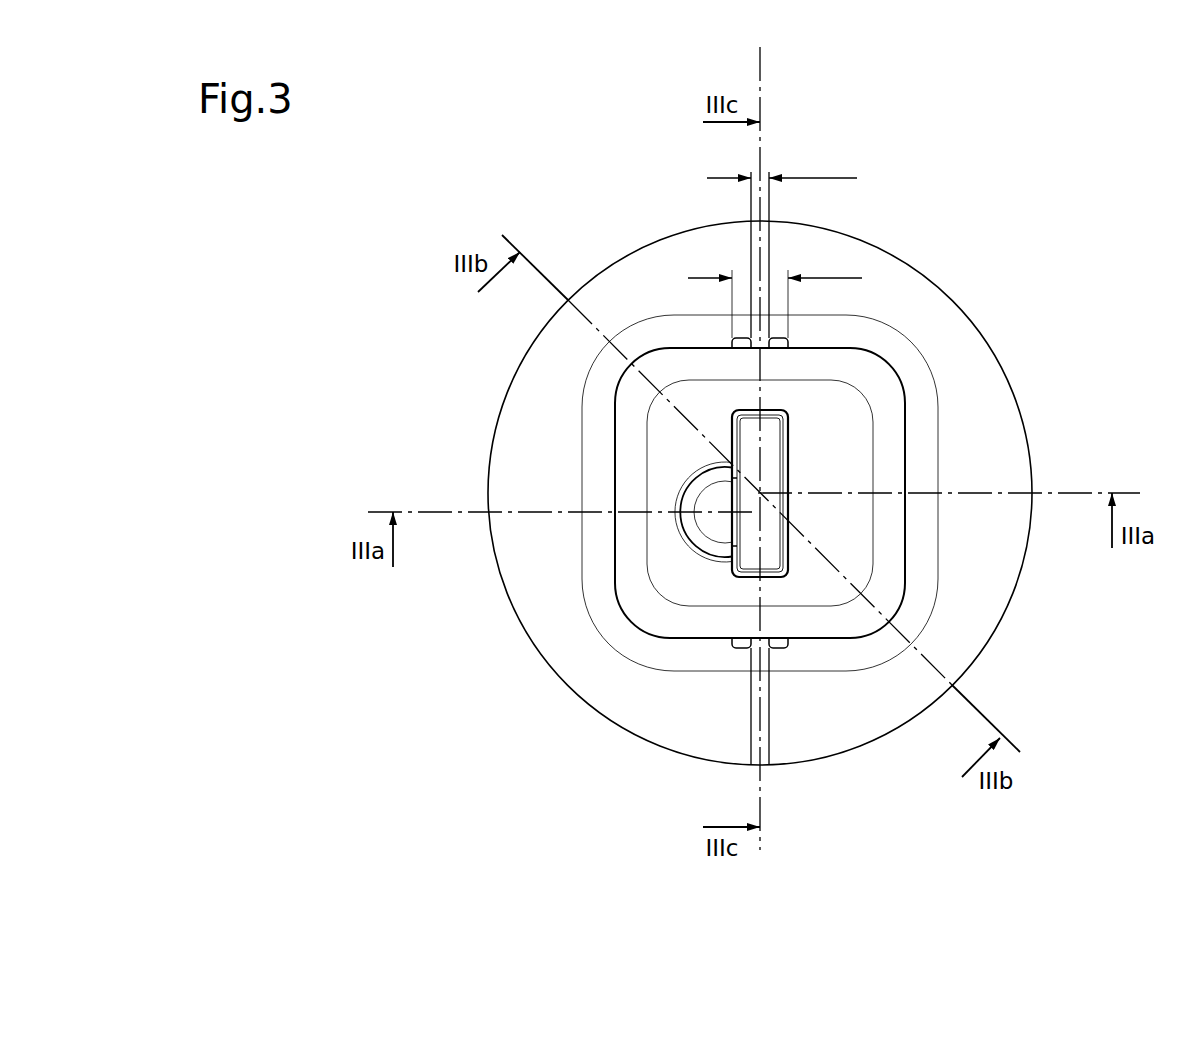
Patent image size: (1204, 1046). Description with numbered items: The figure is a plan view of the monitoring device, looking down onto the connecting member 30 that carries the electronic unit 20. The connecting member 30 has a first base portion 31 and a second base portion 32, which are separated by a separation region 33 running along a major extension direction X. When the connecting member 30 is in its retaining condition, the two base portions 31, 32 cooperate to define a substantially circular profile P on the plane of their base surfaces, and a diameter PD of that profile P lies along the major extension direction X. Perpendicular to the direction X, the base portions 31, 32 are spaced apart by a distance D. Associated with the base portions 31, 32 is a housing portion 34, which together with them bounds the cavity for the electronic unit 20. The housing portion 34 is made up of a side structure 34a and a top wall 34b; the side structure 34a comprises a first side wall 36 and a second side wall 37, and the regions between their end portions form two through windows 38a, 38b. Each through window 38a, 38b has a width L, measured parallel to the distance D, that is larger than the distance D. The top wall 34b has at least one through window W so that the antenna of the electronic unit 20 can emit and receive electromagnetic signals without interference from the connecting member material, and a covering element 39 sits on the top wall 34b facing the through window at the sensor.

The electronic unit 20 is at (782, 442).
The connecting member 30 is at (963, 287).
The first base portion 31 is at (985, 585).
The second base portion 32 is at (625, 702).
The separation region 33 is at (757, 232).
The housing portion 34 is at (905, 473).
The side structure 34a is at (613, 467).
The top wall 34b is at (660, 437).
The first side wall 36 is at (905, 442).
The second side wall 37 is at (613, 562).
The through window 38a is at (780, 650).
The through window 38b is at (740, 338).
The covering element 39 is at (716, 524).
The major extension direction X is at (760, 68).
The distance D is at (823, 178).
The width L is at (836, 278).
The substantially circular profile P is at (997, 635).
The diameter PD is at (760, 785).
The through window W is at (735, 563).